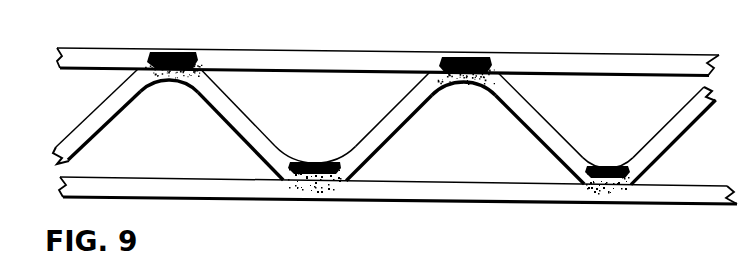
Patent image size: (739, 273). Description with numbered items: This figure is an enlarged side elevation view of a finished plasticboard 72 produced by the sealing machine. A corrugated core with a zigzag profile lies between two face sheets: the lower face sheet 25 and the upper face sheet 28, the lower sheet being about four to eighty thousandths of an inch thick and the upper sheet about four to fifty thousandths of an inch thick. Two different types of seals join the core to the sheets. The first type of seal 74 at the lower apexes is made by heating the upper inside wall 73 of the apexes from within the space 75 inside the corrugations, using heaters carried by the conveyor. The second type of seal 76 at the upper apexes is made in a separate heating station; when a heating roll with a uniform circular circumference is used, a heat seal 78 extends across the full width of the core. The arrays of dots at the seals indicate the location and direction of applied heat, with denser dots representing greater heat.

The finished plasticboard 72 is at (624, 51).
The face sheet 28 is at (322, 48).
The face sheet 25 is at (466, 194).
The space 75 is at (330, 128).
The upper inside wall 73 is at (301, 159).
The heat seal 78 is at (183, 50).
The second type of seal 76 is at (161, 52).
The first type of seal 74 is at (320, 193).